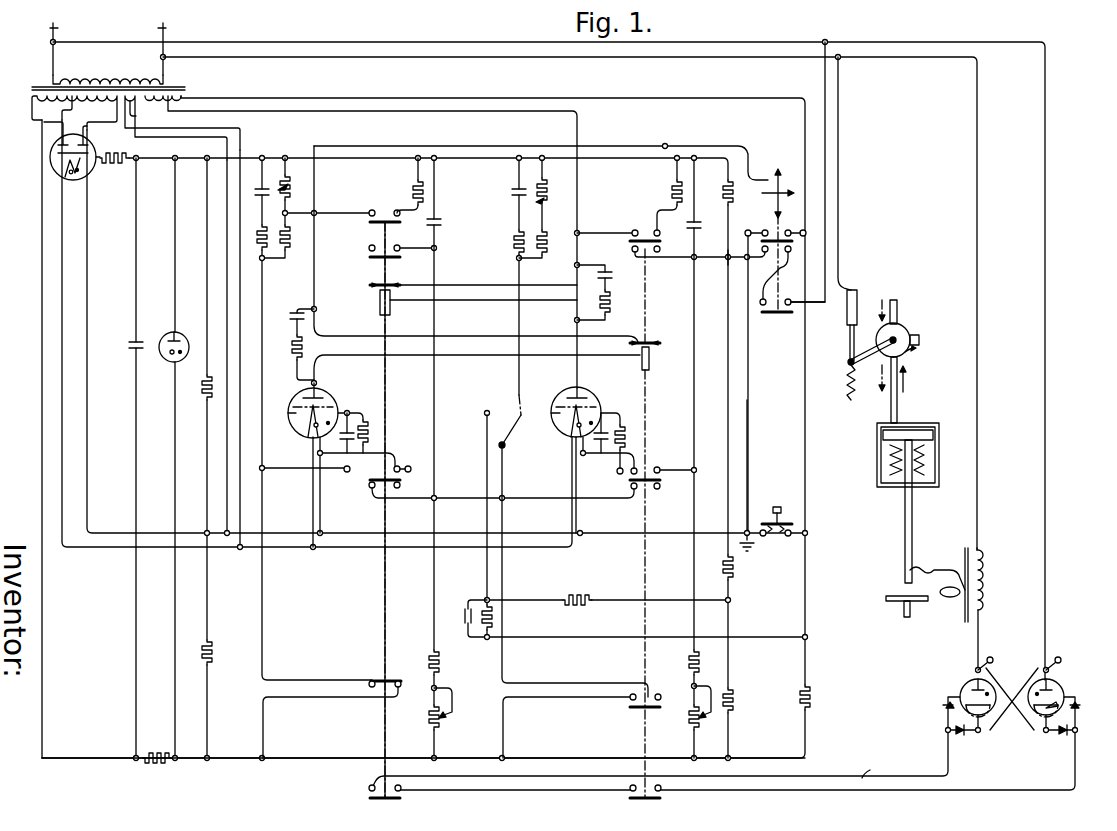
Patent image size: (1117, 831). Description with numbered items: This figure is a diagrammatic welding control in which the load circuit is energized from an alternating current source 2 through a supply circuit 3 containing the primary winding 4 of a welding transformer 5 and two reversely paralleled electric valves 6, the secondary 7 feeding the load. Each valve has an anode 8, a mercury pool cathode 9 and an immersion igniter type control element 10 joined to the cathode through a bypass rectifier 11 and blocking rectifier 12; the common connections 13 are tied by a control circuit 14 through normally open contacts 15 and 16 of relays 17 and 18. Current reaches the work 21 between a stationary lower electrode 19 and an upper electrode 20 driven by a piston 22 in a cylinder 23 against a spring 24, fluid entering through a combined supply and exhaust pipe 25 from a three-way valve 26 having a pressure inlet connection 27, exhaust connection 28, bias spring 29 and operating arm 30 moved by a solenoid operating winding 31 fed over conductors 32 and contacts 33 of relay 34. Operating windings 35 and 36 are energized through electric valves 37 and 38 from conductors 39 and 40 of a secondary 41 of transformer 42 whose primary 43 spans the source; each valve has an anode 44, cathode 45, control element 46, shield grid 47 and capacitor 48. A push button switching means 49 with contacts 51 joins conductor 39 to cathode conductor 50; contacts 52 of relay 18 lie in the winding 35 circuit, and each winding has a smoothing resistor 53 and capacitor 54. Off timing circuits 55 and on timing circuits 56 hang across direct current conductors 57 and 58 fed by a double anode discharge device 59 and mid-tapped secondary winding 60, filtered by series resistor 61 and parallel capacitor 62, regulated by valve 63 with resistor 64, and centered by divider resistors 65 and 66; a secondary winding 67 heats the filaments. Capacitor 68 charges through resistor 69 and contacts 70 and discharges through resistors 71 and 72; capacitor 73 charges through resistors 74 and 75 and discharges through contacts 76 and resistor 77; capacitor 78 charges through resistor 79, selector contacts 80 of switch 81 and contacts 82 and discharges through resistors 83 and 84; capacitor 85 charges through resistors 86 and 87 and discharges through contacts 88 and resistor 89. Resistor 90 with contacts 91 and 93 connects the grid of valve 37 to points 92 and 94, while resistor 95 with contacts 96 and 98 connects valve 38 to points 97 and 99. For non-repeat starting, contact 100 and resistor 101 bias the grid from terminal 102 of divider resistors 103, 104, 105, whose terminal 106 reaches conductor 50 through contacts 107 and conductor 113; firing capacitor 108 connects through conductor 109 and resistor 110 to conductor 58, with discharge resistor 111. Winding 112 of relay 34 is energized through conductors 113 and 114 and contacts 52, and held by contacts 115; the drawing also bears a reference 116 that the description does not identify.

The source of alternating current 2 is at (108, 46).
The supply circuit 3 is at (1045, 241).
The primary winding 4 is at (986, 576).
The welding transformer 5 is at (966, 632).
The electric valves 6 is at (962, 680).
The secondary 7 is at (948, 570).
The anode 8 is at (1024, 656).
The mercury pool cathode 9 is at (1030, 730).
The immersion igniter type control element 10 is at (1064, 686).
The bypass rectifier 11 is at (964, 734).
The blocking rectifier 12 is at (942, 708).
The common connections 13 is at (944, 732).
The control circuit 14 is at (868, 765).
The contacts 15 is at (628, 792).
The contacts 16 is at (367, 790).
The relay 17 is at (646, 288).
The relay 18 is at (385, 282).
The lower electrode 19 is at (902, 620).
The upper electrode 20 is at (902, 542).
The work 21 is at (888, 583).
The piston 22 is at (942, 434).
The cylinder 23 is at (876, 470).
The spring 24 is at (880, 484).
The combined supply and exhaust pipe 25 is at (899, 400).
The three-way valve 26 is at (908, 330).
The pressure inlet connection 27 is at (899, 304).
The exhaust connection 28 is at (920, 340).
The spring 29 is at (848, 396).
The operating arm 30 is at (876, 352).
The operating winding 31 is at (866, 288).
The conductors 32 is at (839, 153).
The normally open contacts 33 is at (762, 314).
The relay 34 is at (782, 226).
The operating winding 35 is at (653, 349).
The operating winding 36 is at (378, 286).
The electric valve 37 is at (325, 394).
The electric valve 38 is at (584, 392).
The alternating current supply conductor 39 is at (422, 98).
The alternating current supply conductor 40 is at (447, 110).
The secondary 41 is at (165, 108).
The transformer 42 is at (181, 86).
The primary 43 is at (110, 74).
The anode 44 is at (306, 384).
The cathode 45 is at (308, 434).
The control element 46 is at (338, 406).
The shield grid 47 is at (296, 412).
The capacitors 48 is at (355, 443).
The switching means 49 is at (773, 510).
The conductor 50 is at (470, 533).
The normally open contacts 51 is at (766, 535).
The normally open contacts 52 is at (381, 209).
The resistor 53 is at (292, 354).
The capacitor 54 is at (292, 314).
The off timing circuit 55 is at (264, 600).
The on timing circuit 56 is at (434, 580).
The direct current supply conductor 57 is at (478, 162).
The direct current supply conductor 58 is at (484, 757).
The double anode discharge device 59 is at (47, 165).
The mid-tapped secondary winding 60 is at (30, 101).
The series resistor 61 is at (116, 162).
The parallel capacitor 62 is at (130, 346).
The regulating valve 63 is at (164, 354).
The voltage absorbing resistor 64 is at (155, 754).
The resistor 65 is at (204, 386).
The resistor 66 is at (202, 659).
The secondary winding 67 is at (126, 120).
The capacitor 68 is at (258, 195).
The fixed resistor 69 is at (258, 246).
The normally closed contacts 70 is at (370, 676).
The fixed resistor 71 is at (286, 246).
The adjustable resistor 72 is at (285, 193).
The capacitor 73 is at (441, 219).
The fixed resistor 74 is at (443, 661).
The adjustable resistor 75 is at (446, 718).
The normally open contacts 76 is at (368, 243).
The fixed resistor 77 is at (422, 192).
The capacitor 78 is at (506, 188).
The fixed resistor 79 is at (510, 236).
The contacts 80 is at (519, 408).
The selector switch 81 is at (514, 430).
The normally open contacts 82 is at (630, 700).
The fixed resistor 83 is at (544, 246).
The adjustable resistor 84 is at (546, 178).
The capacitor 85 is at (696, 234).
The fixed resistor 86 is at (691, 657).
The adjustable resistor 87 is at (688, 725).
The normally closed contacts 88 is at (624, 241).
The fixed resistor 89 is at (665, 178).
The current limiting resistor 90 is at (372, 414).
The normally open contacts 91 is at (406, 464).
The point 92 is at (268, 468).
The normally closed contacts 93 is at (370, 485).
The point 94 is at (432, 500).
The current limiting resistor 95 is at (635, 432).
The normally closed contacts 96 is at (656, 490).
The point 97 is at (504, 498).
The normally open contacts 98 is at (657, 468).
The point 99 is at (697, 470).
The contact 100 is at (487, 413).
The resistor 101 is at (573, 606).
The more negative intermediate terminal 102 is at (732, 602).
The resistor 103 is at (726, 186).
The resistor 104 is at (732, 578).
The resistor 105 is at (732, 700).
The more positive intermediate terminal 106 is at (727, 262).
The normally closed contacts 107 is at (774, 266).
The capacitor 108 is at (468, 600).
The conductor 109 is at (611, 640).
The resistor 110 is at (810, 696).
The discharge resistor 111 is at (494, 610).
The operating winding 112 is at (779, 178).
The conductor 113 is at (747, 393).
The conductor 114 is at (468, 146).
The normally open contacts 115 is at (748, 230).
The conductor 116 is at (635, 228).